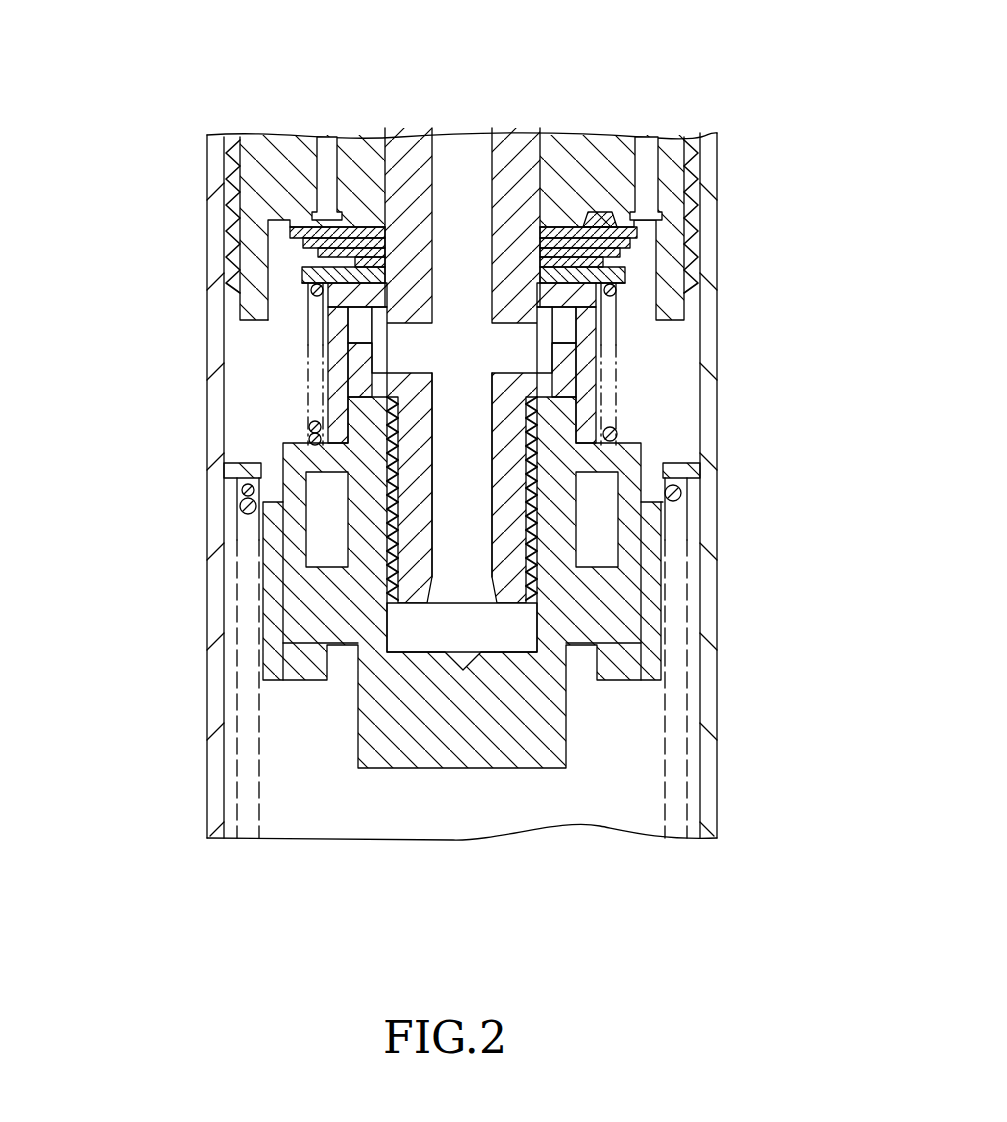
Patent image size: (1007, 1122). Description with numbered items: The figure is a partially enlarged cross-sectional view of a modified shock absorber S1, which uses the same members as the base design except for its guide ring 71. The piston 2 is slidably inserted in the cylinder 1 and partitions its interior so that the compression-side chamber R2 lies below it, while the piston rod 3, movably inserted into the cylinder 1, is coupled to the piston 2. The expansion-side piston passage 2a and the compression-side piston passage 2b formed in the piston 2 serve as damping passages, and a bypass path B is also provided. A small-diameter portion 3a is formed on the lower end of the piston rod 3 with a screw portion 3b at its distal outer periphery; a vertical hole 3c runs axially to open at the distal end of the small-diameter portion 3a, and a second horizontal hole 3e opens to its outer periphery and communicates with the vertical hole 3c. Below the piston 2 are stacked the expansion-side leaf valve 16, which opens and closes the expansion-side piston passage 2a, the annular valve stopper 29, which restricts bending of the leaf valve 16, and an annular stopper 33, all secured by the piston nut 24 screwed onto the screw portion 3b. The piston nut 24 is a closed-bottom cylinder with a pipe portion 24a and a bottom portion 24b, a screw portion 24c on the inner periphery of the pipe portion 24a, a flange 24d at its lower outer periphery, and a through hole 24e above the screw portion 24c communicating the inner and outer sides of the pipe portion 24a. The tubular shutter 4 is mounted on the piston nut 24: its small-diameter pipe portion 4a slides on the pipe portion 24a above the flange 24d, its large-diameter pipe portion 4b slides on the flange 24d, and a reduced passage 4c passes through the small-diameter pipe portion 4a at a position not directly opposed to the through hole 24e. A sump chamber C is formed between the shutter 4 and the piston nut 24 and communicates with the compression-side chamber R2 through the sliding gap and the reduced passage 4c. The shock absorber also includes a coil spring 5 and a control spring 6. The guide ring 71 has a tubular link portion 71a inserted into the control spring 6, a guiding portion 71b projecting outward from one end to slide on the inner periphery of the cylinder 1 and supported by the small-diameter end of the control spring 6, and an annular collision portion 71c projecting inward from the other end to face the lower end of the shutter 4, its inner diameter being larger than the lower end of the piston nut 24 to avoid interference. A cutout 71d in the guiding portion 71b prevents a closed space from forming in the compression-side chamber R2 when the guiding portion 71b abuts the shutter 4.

The cylinder 1 is at (713, 652).
The piston 2 is at (505, 185).
The expansion-side piston passage 2a is at (327, 137).
The compression-side piston passage 2b is at (646, 137).
The piston rod 3 is at (374, 331).
The small-diameter portion 3a is at (548, 177).
The screw portion 3b is at (398, 583).
The vertical hole 3c is at (470, 135).
The second horizontal hole 3e is at (403, 342).
The shutter 4 is at (481, 364).
The small-diameter pipe portion 4a is at (306, 420).
The large-diameter pipe portion 4b is at (330, 520).
The reduced passage 4c is at (617, 428).
The coil spring 5 is at (292, 297).
The control spring 6 is at (690, 500).
The expansion-side leaf valve 16 is at (640, 236).
The valve stopper 29 is at (626, 275).
The annular stopper 33 is at (616, 292).
The piston nut 24 is at (489, 631).
The pipe portion 24a is at (598, 518).
The bottom portion 24b is at (445, 768).
The screw portion 24c is at (530, 558).
The flange 24d is at (330, 612).
The through hole 24e is at (356, 372).
The guide ring 71 is at (480, 617).
The link portion 71a is at (672, 553).
The guiding portion 71b is at (672, 463).
The collision portion 71c is at (655, 690).
The cutout 71d is at (240, 468).
The sump chamber C is at (250, 500).
The bypass path B is at (502, 135).
The shock absorber S1 is at (158, 114).
The compression-side chamber R2 is at (646, 792).